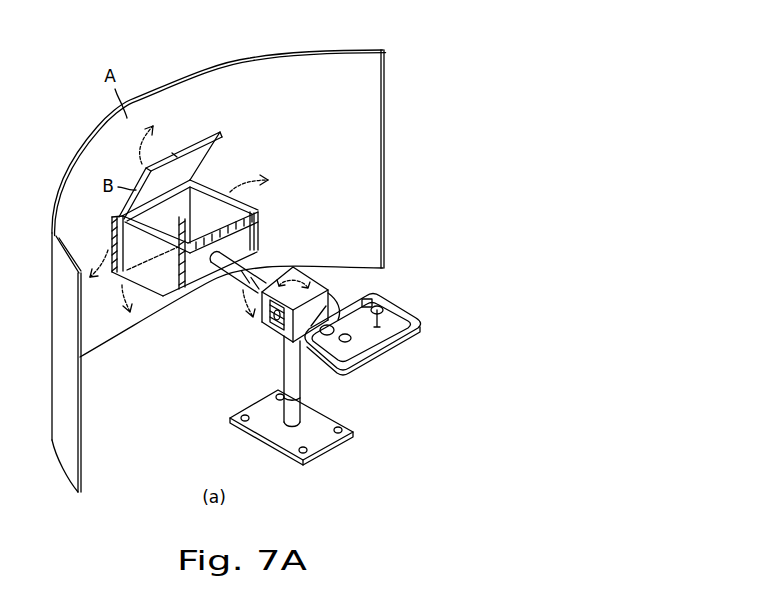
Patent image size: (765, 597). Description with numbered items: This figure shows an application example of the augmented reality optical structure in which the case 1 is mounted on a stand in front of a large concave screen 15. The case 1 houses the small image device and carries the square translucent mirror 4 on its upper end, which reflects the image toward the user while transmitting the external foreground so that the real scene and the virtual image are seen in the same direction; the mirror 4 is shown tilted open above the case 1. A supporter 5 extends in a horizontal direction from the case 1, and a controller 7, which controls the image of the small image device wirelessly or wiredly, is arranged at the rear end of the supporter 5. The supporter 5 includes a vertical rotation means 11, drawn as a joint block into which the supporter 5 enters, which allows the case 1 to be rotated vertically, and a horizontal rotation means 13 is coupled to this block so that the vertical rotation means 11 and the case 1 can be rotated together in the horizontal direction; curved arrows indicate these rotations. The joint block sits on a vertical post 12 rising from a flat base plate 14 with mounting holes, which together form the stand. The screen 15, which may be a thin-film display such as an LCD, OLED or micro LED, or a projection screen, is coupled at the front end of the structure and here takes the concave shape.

The case 1 is at (150, 289).
The translucent mirror 4 is at (209, 148).
The supporter 5 is at (237, 259).
The controller 7 is at (381, 340).
The vertical rotation means 11 is at (262, 318).
The support post 12 is at (283, 372).
The horizontal rotation means 13 is at (274, 329).
The base plate 14 is at (322, 423).
The screen 15 is at (370, 93).